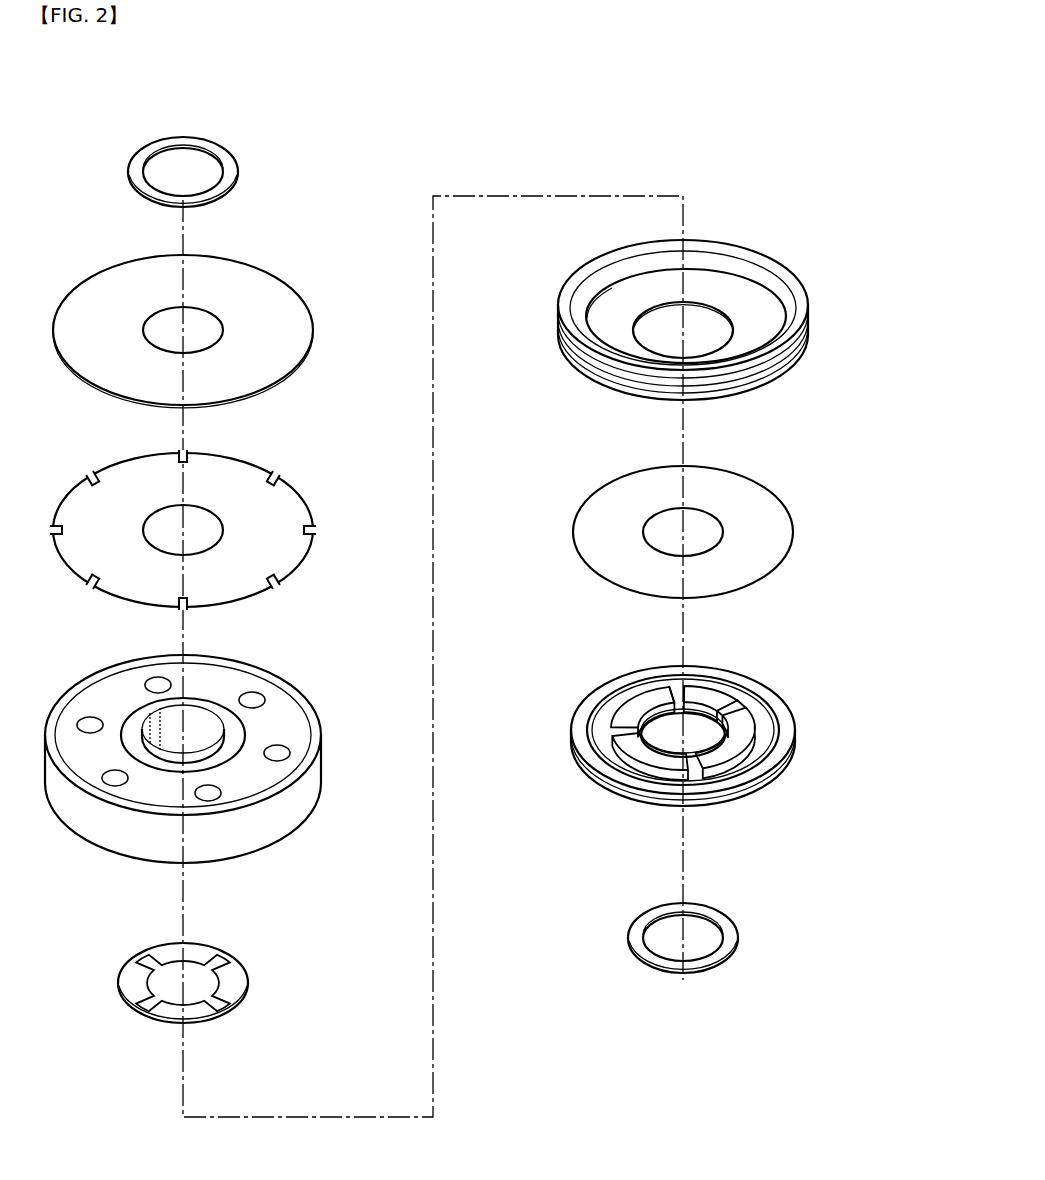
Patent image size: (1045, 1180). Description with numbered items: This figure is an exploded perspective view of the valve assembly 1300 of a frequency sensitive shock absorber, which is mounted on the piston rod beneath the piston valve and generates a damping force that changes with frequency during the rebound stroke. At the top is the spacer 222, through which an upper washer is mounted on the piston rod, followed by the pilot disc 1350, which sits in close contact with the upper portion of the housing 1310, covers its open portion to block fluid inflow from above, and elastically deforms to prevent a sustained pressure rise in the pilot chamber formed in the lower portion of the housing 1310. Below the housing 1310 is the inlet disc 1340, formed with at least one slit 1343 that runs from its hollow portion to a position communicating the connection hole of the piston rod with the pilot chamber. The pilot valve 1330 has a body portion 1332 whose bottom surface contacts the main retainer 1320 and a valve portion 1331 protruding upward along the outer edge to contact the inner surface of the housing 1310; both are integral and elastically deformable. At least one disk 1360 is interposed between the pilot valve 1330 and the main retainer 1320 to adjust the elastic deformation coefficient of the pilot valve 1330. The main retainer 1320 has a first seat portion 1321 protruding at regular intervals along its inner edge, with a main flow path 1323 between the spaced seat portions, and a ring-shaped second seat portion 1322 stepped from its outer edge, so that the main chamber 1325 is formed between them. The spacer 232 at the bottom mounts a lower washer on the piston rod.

The valve assembly 1300 is at (100, 114).
The spacer 222 is at (232, 176).
The pilot disc 1350 is at (330, 532).
The housing 1310 is at (318, 712).
The inlet disc 1340 is at (248, 975).
The slit 1343 is at (226, 994).
The pilot valve 1330 is at (758, 320).
The valve portion 1331 is at (795, 291).
The body portion 1332 is at (758, 336).
The disk 1360 is at (787, 521).
The main retainer 1320 is at (737, 735).
The first seat portion 1321 is at (745, 727).
The second seat portion 1322 is at (775, 715).
The main flow path 1323 is at (670, 697).
The main chamber 1325 is at (757, 712).
The spacer 232 is at (735, 938).